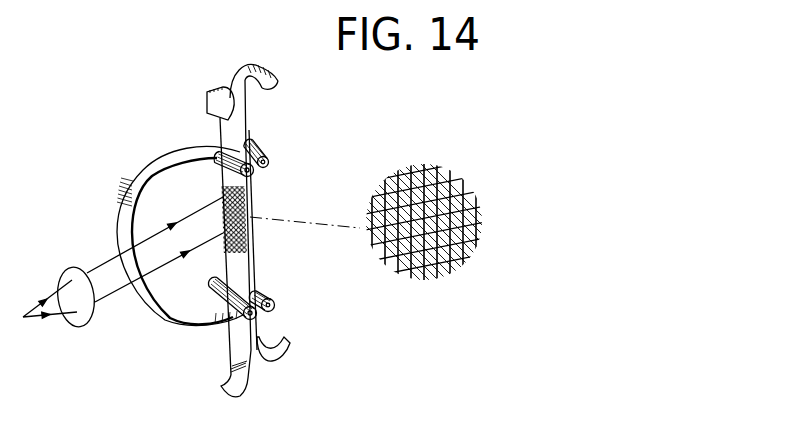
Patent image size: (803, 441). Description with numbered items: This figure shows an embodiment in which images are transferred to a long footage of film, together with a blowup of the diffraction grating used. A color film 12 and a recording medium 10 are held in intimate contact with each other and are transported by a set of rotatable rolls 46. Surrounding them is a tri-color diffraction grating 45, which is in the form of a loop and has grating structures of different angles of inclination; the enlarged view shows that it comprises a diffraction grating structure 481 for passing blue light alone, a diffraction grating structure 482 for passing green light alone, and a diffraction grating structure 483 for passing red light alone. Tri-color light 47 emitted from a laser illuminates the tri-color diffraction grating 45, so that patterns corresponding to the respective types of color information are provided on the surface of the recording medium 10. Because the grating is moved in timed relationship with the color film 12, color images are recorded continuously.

The recording medium 10 is at (255, 70).
The color film 12 is at (210, 100).
The tri-color diffraction grating 45 is at (197, 330).
The rotatable rolls 46 is at (268, 161).
The tri-color light 47 is at (113, 293).
The diffraction grating structure 481 is at (458, 190).
The diffraction grating structure 482 is at (462, 262).
The diffraction grating structure 483 is at (420, 280).